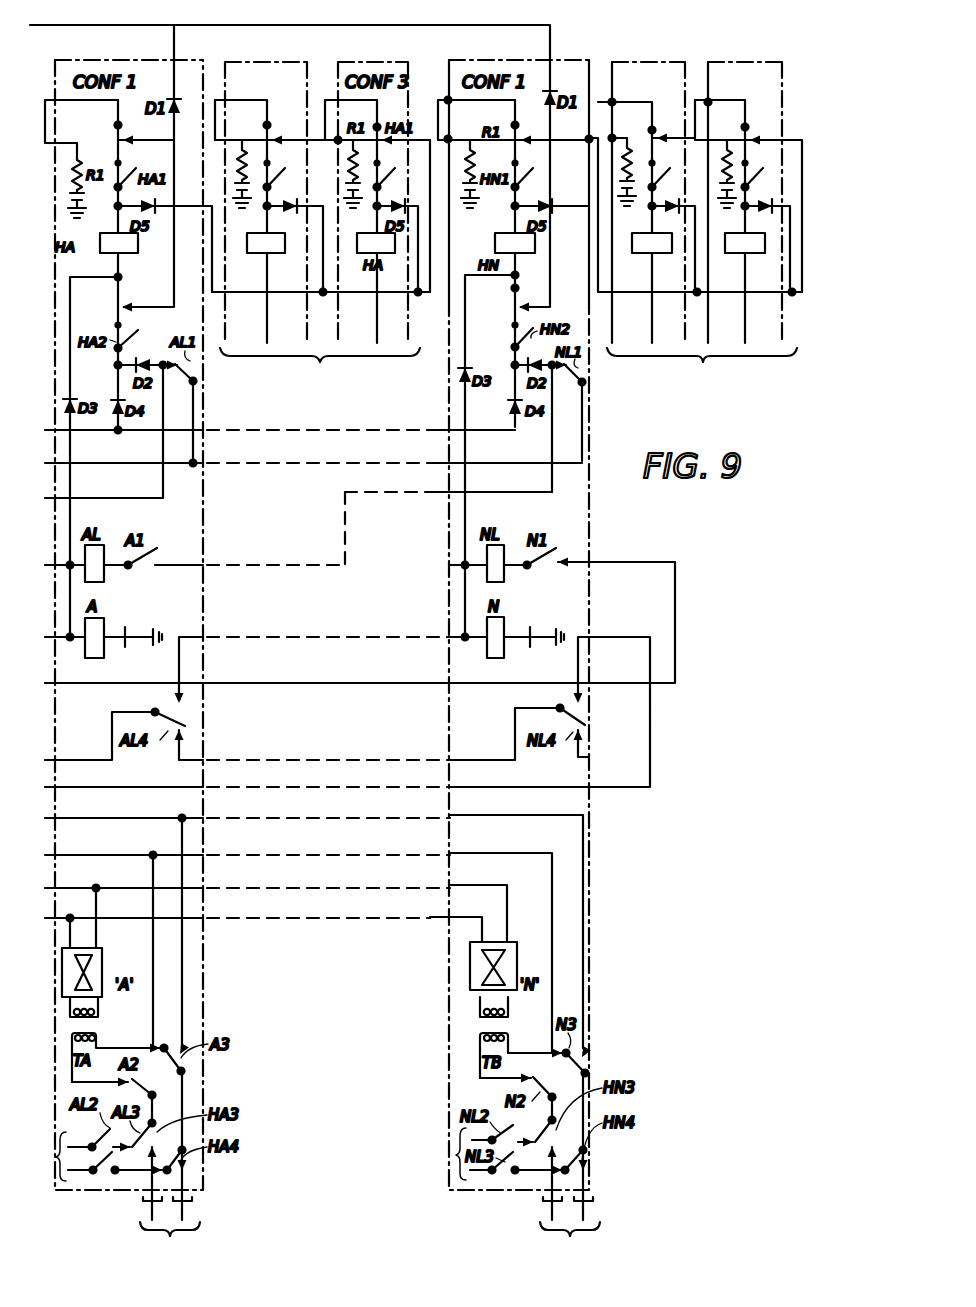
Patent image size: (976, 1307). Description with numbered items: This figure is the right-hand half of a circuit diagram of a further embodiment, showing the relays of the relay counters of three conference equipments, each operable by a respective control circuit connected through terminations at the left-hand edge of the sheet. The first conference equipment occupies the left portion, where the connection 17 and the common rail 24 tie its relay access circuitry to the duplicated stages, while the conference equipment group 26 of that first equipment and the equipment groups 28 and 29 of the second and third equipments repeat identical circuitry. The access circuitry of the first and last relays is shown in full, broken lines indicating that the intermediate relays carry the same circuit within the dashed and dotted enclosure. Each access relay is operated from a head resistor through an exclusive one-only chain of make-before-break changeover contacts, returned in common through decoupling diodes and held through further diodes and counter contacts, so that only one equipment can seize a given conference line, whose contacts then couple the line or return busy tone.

The supply line 17 is at (429, 112).
The common bus line 24 is at (433, 272).
The conference circuit group 26 is at (206, 108).
The conference circuit group 28 is at (599, 103).
The conference circuit group 29 is at (690, 111).